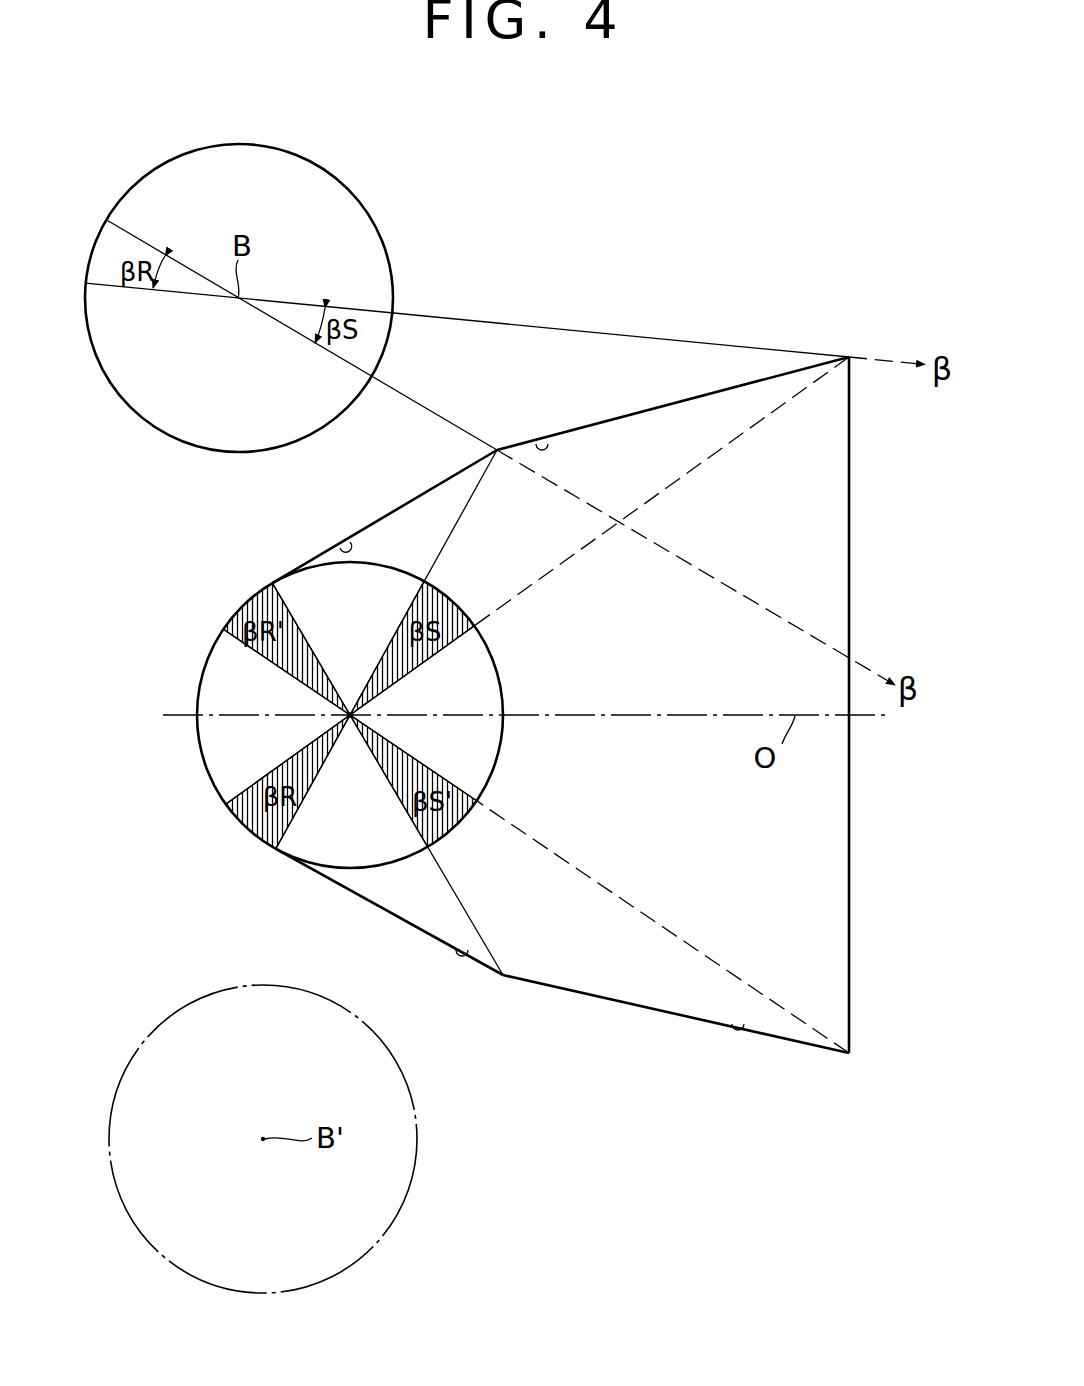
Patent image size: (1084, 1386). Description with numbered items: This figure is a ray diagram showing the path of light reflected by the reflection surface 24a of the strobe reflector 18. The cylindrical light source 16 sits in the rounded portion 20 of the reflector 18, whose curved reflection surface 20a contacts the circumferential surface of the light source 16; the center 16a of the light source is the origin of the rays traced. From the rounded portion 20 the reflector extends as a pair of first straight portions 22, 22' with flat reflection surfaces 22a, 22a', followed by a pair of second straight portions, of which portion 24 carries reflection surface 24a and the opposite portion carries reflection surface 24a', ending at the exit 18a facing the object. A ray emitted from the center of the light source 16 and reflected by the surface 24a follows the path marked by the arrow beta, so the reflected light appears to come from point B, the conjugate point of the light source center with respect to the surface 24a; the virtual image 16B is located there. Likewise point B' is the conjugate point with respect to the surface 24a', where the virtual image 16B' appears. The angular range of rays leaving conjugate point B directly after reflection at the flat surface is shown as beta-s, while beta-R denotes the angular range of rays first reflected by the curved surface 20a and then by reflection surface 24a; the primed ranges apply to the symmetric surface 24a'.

The light source 16 is at (502, 770).
The center of light beam 16a is at (352, 714).
The virtual image 16B is at (467, 298).
The virtual image 16B' is at (315, 1139).
The reflector 18 is at (653, 407).
The exit 18a is at (832, 527).
The rounded portion 20 is at (202, 753).
The reflection surface 20a is at (212, 777).
The first straight portion 22 is at (384, 509).
The reflection surface 22a is at (322, 519).
The first straight portion 22' is at (389, 913).
The reflection surface 22a' is at (460, 986).
The second straight portion 24 is at (602, 422).
The reflection surface 24a is at (532, 419).
The reflection surface 24a' is at (743, 1061).